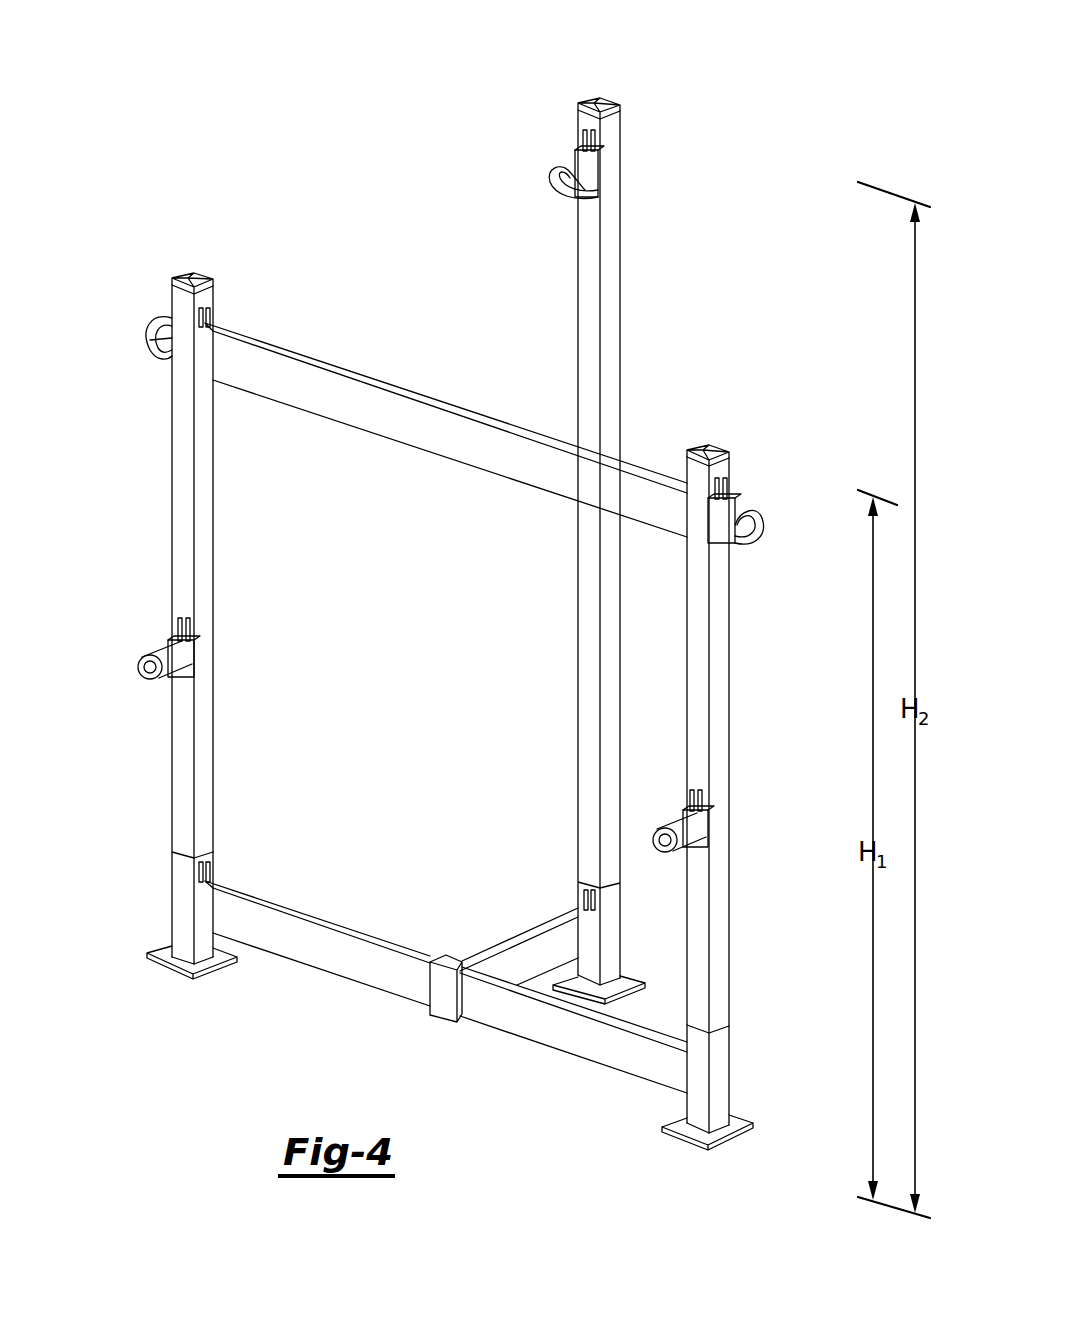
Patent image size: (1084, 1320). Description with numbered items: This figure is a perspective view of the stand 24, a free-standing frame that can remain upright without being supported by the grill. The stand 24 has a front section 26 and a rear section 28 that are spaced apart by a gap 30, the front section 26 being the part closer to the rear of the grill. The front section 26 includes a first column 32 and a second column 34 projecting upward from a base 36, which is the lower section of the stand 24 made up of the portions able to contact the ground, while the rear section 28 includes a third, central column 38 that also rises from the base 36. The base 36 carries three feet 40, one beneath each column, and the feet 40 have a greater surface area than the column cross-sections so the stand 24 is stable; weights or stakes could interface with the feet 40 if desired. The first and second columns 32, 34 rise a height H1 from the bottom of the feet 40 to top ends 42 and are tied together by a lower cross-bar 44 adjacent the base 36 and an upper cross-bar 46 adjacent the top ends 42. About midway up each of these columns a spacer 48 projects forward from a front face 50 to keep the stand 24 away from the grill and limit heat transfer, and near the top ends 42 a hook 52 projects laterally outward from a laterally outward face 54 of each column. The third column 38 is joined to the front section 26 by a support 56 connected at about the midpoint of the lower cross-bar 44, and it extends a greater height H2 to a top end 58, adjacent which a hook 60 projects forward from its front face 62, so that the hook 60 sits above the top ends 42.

The stand 24 is at (779, 432).
The front section 26 is at (760, 977).
The rear section 28 is at (676, 214).
The gap 30 is at (478, 370).
The first column 32 is at (135, 580).
The second column 34 is at (759, 747).
The base 36 is at (279, 978).
The third column 38 is at (643, 326).
The feet 40 is at (162, 950).
The top ends 42 is at (194, 272).
The lower cross-bar 44 is at (315, 923).
The upper cross-bar 46 is at (398, 425).
The spacer 48 is at (166, 652).
The front face 50 is at (185, 455).
The hook 52 is at (120, 321).
The laterally outward face 54 is at (172, 408).
The support 56 is at (522, 940).
The top end 58 is at (598, 97).
The hook 60 is at (531, 160).
The front face 62 is at (588, 268).